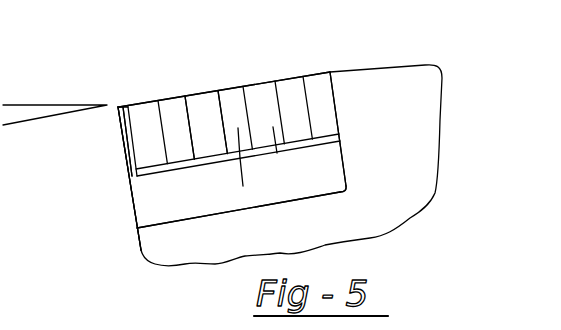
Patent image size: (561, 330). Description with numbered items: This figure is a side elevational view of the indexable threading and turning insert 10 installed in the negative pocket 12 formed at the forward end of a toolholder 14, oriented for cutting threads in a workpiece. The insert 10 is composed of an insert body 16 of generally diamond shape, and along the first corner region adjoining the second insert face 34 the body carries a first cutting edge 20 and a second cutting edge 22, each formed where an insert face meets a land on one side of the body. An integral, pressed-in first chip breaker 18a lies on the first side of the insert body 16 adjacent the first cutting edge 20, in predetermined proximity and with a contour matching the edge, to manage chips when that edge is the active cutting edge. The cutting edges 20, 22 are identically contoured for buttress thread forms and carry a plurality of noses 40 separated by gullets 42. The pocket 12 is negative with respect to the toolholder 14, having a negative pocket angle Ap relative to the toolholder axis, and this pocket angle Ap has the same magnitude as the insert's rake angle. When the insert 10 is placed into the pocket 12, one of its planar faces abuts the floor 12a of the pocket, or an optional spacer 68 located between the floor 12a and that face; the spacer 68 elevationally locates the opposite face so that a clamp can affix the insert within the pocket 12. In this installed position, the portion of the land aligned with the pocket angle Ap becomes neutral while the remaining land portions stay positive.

The indexable threading and turning insert 10 is at (314, 73).
The pocket 12 is at (328, 112).
The floor of the pocket 12a is at (346, 188).
The toolholder 14 is at (441, 117).
The insert body 16 is at (128, 106).
The first chip breaker 18a is at (127, 107).
The first cutting edge 20 is at (120, 105).
The second cutting edge 22 is at (263, 157).
The second insert face 34 is at (208, 128).
The noses 40 is at (240, 170).
The gullets 42 is at (278, 154).
The spacer 68 is at (134, 203).
The pocket angle Ap is at (37, 155).